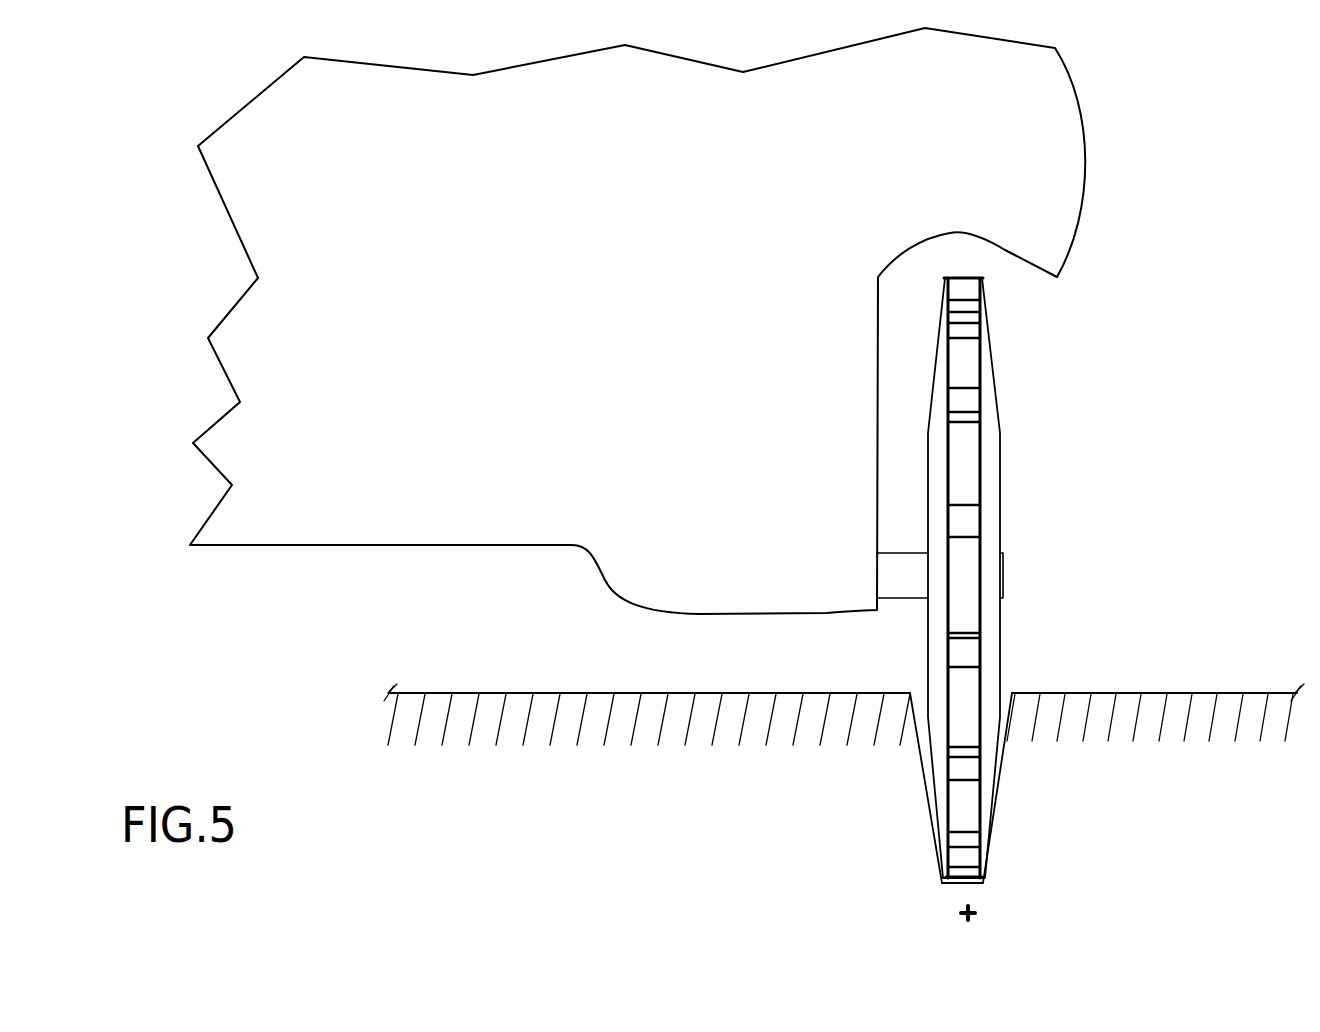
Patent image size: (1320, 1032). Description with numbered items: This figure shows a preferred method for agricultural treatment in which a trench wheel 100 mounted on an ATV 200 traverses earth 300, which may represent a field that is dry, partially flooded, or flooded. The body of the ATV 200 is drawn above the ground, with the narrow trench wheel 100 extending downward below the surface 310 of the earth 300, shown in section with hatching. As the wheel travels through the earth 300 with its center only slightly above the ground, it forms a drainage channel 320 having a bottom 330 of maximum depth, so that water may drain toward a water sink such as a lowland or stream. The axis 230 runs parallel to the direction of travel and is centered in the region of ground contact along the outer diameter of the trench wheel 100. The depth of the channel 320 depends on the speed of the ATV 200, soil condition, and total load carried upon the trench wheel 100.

The trench wheel 100 is at (1006, 384).
The ATV 200 is at (634, 303).
The earth 300 is at (663, 746).
The floor surface 310 is at (757, 693).
The drainage channel 320 is at (928, 807).
The bottom 330 is at (975, 884).
The axis 230 is at (960, 912).